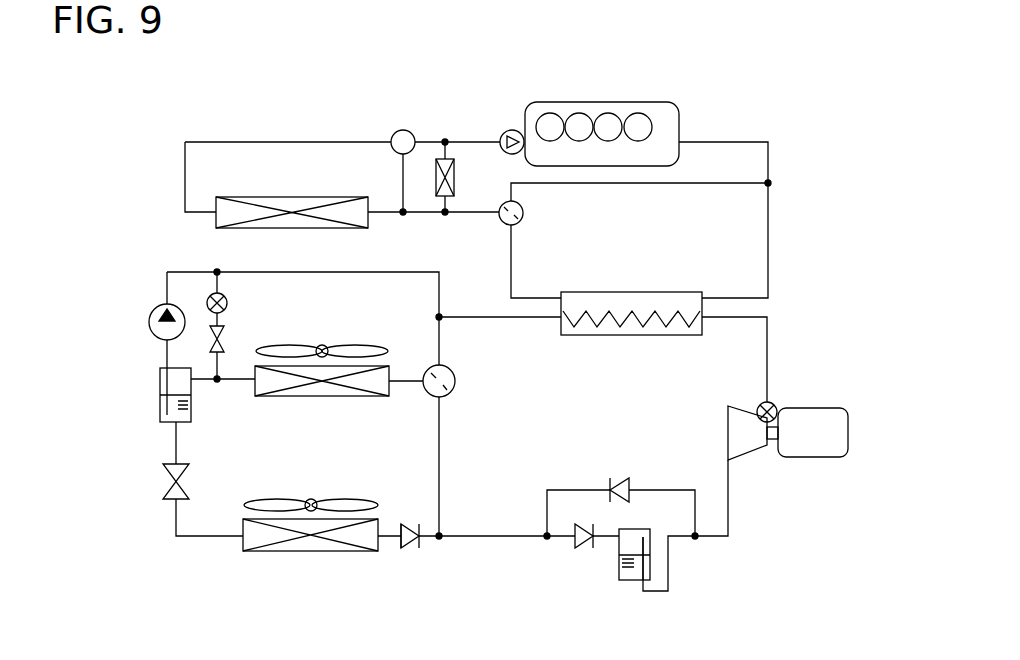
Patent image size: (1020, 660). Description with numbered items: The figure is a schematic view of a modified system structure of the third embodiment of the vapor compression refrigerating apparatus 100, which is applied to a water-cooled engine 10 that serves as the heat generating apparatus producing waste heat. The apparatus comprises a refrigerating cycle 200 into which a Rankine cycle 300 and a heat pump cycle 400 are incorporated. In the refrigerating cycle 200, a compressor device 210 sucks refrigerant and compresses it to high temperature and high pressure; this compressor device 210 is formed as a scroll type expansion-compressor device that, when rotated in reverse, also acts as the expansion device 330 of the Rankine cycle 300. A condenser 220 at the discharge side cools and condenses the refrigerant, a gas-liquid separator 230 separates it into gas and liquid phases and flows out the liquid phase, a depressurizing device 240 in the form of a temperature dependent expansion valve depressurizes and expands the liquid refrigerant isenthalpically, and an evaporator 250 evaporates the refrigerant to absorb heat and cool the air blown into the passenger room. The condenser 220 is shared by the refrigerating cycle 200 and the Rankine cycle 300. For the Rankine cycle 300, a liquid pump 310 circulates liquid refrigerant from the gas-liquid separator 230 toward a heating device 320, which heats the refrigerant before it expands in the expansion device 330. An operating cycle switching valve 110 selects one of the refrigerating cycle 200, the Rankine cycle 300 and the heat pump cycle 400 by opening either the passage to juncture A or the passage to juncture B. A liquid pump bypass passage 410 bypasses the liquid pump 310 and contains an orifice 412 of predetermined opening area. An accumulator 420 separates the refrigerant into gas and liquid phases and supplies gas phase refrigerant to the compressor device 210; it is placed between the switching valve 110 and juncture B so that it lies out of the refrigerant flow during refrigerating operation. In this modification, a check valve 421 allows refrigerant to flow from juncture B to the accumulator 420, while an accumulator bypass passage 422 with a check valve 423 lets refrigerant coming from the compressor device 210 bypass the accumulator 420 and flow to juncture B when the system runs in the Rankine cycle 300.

The engine 10 is at (574, 101).
The vapor compression refrigerating apparatus 100 is at (169, 256).
The operating cycle switching valve 110 is at (457, 381).
The refrigerating cycle 200 is at (776, 339).
The compressor device 210 is at (728, 409).
The condenser 220 is at (322, 398).
The gas-liquid separator 230 is at (160, 394).
The depressurizing device 240 is at (163, 482).
The evaporator 250 is at (305, 553).
The Rankine cycle 300 is at (388, 272).
The liquid pump 310 is at (149, 322).
The heating device 320 is at (592, 336).
The expansion device 330 is at (716, 422).
The heat pump cycle 400 is at (353, 308).
The liquid pump bypass passage 410 is at (228, 300).
The orifice 412 is at (228, 335).
The accumulator 420 is at (619, 573).
The check valve 421 is at (585, 548).
The accumulator bypass passage 422 is at (552, 490).
The check valve 423 is at (618, 478).
The juncture B is at (443, 540).